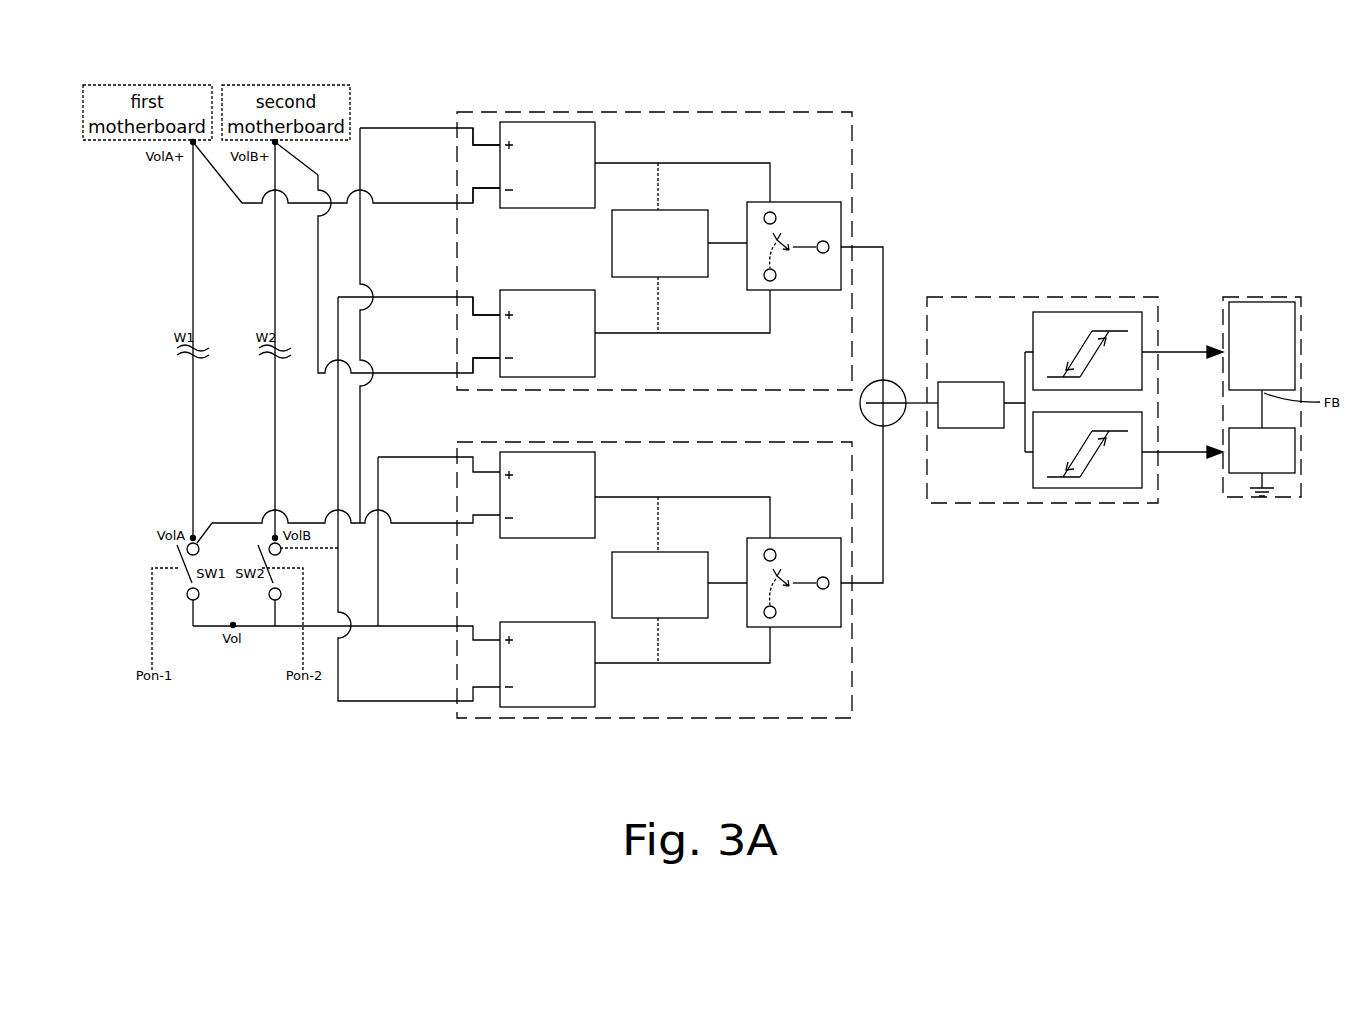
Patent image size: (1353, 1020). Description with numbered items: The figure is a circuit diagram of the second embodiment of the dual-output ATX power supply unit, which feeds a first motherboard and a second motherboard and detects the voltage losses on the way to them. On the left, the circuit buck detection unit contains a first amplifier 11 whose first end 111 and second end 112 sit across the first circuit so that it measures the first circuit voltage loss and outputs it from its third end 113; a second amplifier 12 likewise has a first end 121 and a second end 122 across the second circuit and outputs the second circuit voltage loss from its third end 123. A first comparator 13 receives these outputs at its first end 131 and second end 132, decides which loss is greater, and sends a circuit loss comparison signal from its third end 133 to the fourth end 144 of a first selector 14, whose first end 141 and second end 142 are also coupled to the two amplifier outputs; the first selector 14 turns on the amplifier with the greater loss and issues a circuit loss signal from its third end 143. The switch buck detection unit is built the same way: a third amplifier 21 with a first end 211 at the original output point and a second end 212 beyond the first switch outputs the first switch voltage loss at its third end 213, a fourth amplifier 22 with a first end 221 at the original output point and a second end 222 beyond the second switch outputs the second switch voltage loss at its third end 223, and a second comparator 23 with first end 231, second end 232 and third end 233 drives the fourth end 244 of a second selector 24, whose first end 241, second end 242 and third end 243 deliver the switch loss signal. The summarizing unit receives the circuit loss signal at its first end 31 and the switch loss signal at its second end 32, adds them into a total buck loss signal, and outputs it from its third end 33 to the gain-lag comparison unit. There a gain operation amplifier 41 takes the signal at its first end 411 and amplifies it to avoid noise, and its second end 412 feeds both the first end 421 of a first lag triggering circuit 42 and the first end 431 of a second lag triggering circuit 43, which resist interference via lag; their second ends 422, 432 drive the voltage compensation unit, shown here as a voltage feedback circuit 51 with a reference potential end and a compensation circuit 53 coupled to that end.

The first amplifier 11 is at (547, 165).
The first end of the first amplifier 111 is at (500, 144).
The second end of the first amplifier 112 is at (500, 190).
The third end of the first amplifier 113 is at (595, 163).
The second amplifier 12 is at (547, 333).
The first end of the second amplifier 121 is at (500, 314).
The second end of the second amplifier 122 is at (500, 359).
The third end of the second amplifier 123 is at (595, 334).
The first comparator 13 is at (660, 243).
The first end of the first comparator 131 is at (658, 208).
The second end of the first comparator 132 is at (658, 278).
The third end of the first comparator 133 is at (708, 242).
The first selector 14 is at (793, 202).
The first end of the first selector 141 is at (770, 200).
The second end of the first selector 142 is at (771, 291).
The third end of the first selector 143 is at (842, 245).
The fourth end of the first selector 144 is at (747, 245).
The third amplifier 21 is at (547, 495).
The first end of the third amplifier 211 is at (500, 474).
The second end of the third amplifier 212 is at (497, 568).
The third end of the third amplifier 213 is at (595, 497).
The fourth amplifier 22 is at (547, 664).
The first end of the fourth amplifier 221 is at (500, 640).
The second end of the fourth amplifier 222 is at (500, 688).
The third end of the fourth amplifier 223 is at (595, 664).
The second comparator 23 is at (660, 585).
The first end of the second comparator 231 is at (658, 551).
The second end of the second comparator 232 is at (658, 619).
The third end of the second comparator 233 is at (708, 582).
The second selector 24 is at (793, 538).
The first end of the second selector 241 is at (770, 537).
The second end of the second selector 242 is at (771, 628).
The third end of the second selector 243 is at (842, 585).
The fourth end of the second selector 244 is at (747, 584).
The first end of the summarizing unit 31 is at (883, 380).
The second end of the summarizing unit 32 is at (886, 430).
The third end of the summarizing unit 33 is at (908, 400).
The gain operation amplifier 41 is at (968, 429).
The first end of the gain operation amplifier 411 is at (938, 395).
The second end of the gain operation amplifier 412 is at (1004, 400).
The first lag triggering circuit 42 is at (1085, 488).
The first end of the first lag triggering circuit 421 is at (1033, 452).
The second end of the first lag triggering circuit 422 is at (1142, 452).
The second lag triggering circuit 43 is at (1085, 312).
The first end of the second lag triggering circuit 431 is at (1033, 352).
The second end of the second lag triggering circuit 432 is at (1142, 352).
The voltage feedback circuit 51 is at (1262, 346).
The compensation circuit 53 is at (1262, 462).